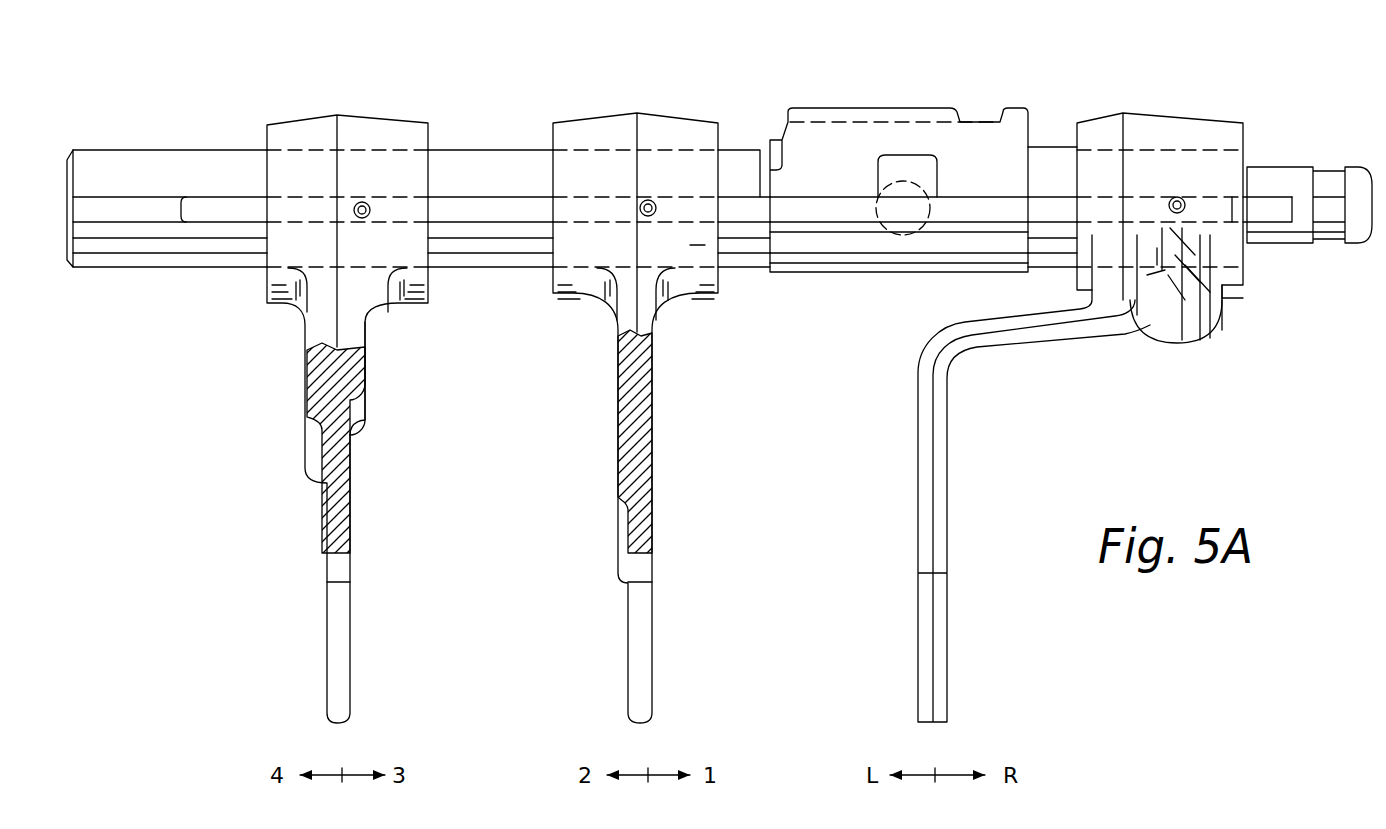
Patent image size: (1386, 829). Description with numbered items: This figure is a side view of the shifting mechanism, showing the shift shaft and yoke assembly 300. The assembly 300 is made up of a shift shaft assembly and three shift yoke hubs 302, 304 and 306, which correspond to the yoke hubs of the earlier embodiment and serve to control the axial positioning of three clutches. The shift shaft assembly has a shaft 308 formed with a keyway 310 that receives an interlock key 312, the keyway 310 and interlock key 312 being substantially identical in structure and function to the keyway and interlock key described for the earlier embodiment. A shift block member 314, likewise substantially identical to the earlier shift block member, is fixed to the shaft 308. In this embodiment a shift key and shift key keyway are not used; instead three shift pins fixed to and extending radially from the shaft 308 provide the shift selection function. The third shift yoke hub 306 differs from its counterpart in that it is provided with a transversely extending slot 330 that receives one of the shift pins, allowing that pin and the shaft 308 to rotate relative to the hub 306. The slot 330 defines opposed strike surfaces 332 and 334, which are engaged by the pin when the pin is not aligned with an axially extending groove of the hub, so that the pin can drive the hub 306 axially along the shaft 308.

The shift shaft and yoke assembly 300 is at (1118, 94).
The shift yoke hub 302 is at (407, 130).
The shift yoke hub 304 is at (672, 130).
The shift yoke hub 306 is at (1200, 118).
The shaft 308 is at (1355, 165).
The keyway 310 is at (113, 208).
The interlock key 312 is at (233, 186).
The shift block member 314 is at (920, 99).
The transversely extending slot 330 is at (1225, 290).
The strike surface 332 is at (1165, 270).
The strike surface 334 is at (1247, 285).